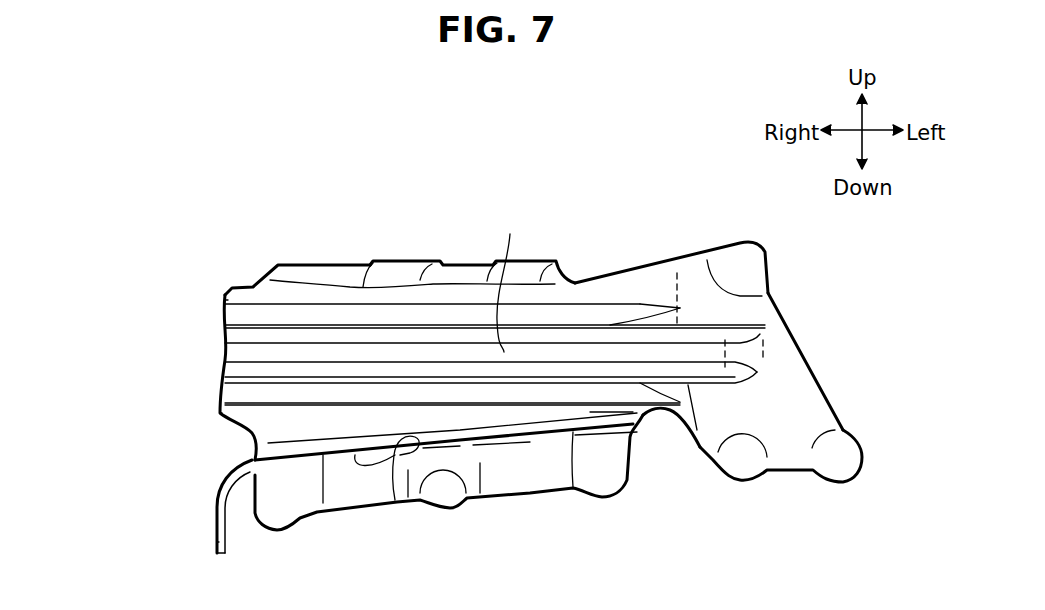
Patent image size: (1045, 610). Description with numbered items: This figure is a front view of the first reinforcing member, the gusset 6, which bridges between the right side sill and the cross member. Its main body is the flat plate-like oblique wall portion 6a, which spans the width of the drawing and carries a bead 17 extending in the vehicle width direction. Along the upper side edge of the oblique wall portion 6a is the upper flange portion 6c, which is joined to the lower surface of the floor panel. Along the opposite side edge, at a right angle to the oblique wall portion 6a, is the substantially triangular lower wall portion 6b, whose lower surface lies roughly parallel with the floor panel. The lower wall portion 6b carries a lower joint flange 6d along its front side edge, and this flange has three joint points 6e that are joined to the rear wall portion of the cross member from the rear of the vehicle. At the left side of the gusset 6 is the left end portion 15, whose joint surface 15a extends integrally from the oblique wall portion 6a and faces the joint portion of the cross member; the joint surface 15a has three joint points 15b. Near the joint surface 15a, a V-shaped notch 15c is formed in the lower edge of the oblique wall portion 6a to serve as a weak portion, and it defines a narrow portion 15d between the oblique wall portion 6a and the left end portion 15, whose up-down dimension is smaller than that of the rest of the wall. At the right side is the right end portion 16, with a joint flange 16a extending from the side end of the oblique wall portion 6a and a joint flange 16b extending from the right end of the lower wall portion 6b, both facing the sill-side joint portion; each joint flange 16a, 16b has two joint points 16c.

The gusset 6 is at (592, 268).
The oblique wall portion 6a is at (460, 278).
The lower wall portion 6b is at (395, 500).
The upper flange portion 6c is at (400, 267).
The lower joint flange 6d is at (518, 495).
The joint points 6e is at (277, 530).
The left end portion 15 is at (722, 236).
The joint surface 15a is at (793, 375).
The joint points 15b is at (753, 263).
The notch 15c is at (660, 422).
The narrow portion 15d is at (633, 266).
The right end portion 16 is at (397, 414).
The joint flange 16a is at (220, 398).
The joint flange 16b is at (217, 507).
The joint points 16c is at (227, 300).
The bead 17 is at (510, 234).